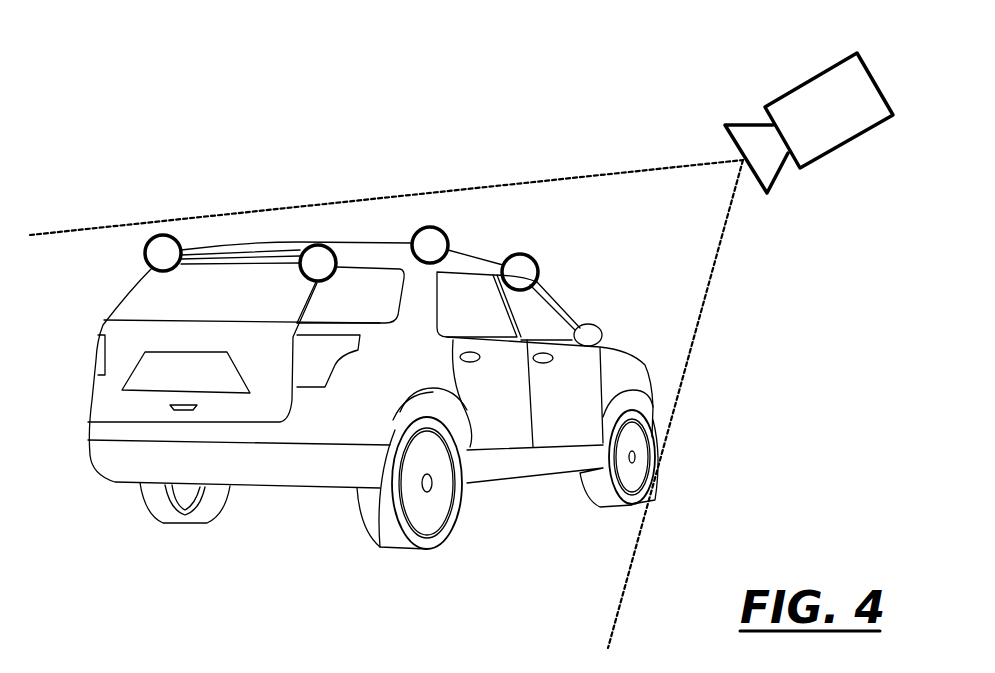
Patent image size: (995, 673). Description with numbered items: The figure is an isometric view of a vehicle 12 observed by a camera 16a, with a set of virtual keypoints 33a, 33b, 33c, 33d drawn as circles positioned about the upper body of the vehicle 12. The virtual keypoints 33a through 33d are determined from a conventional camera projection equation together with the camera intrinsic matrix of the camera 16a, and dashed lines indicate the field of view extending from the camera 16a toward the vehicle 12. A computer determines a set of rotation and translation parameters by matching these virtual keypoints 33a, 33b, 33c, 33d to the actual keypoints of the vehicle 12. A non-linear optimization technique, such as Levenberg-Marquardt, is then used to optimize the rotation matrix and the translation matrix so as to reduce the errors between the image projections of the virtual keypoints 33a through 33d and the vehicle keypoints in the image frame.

The vehicle 12 is at (253, 519).
The camera 16a is at (803, 59).
The virtual keypoint 33a is at (155, 236).
The virtual keypoint 33b is at (430, 227).
The virtual keypoint 33c is at (538, 262).
The virtual keypoint 33d is at (314, 245).